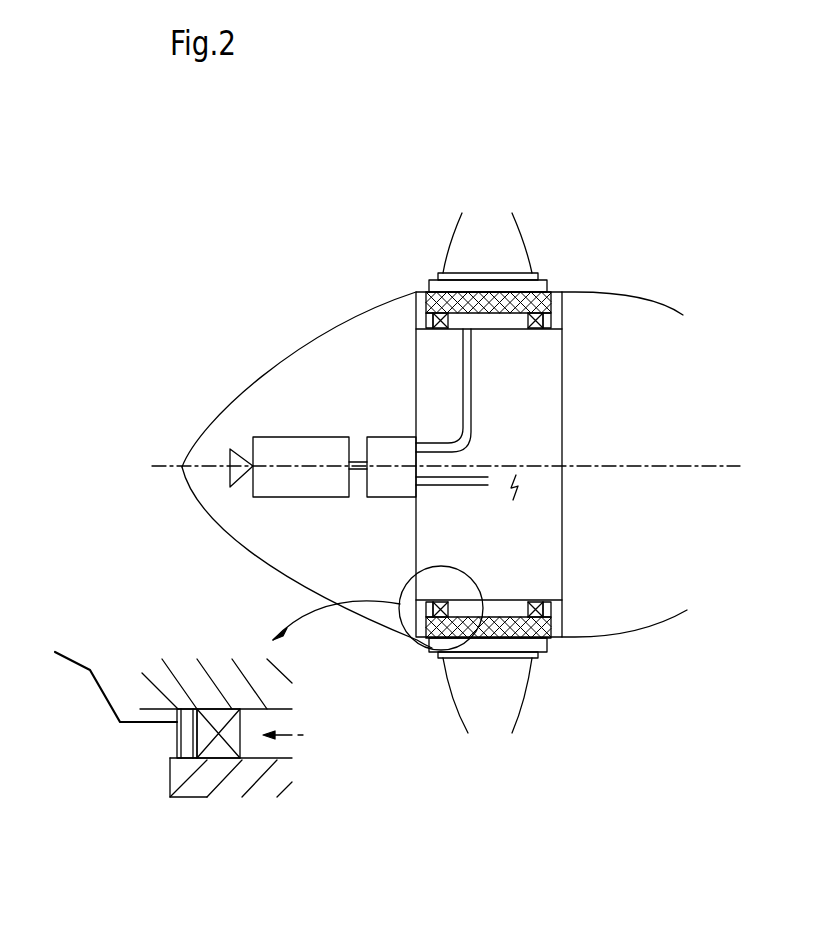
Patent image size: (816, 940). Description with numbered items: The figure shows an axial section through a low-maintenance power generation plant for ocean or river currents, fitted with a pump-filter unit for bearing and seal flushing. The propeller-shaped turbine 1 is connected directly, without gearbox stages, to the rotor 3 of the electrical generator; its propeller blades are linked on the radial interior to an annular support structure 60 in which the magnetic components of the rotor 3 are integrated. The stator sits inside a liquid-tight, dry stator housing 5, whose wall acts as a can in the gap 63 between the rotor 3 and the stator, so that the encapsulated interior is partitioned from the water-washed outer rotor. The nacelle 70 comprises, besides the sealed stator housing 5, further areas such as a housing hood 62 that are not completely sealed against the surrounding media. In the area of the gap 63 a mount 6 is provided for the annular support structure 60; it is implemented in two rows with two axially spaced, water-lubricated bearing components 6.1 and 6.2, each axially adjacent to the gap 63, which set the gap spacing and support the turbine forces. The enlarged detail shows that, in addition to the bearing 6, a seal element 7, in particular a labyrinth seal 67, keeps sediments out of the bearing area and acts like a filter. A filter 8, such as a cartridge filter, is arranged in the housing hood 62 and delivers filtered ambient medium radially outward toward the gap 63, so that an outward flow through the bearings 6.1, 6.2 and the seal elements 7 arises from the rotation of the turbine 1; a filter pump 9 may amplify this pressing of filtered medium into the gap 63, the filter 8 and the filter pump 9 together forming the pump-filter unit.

The turbine 1 is at (488, 237).
The rotor 3 is at (552, 295).
The stator housing 5 is at (563, 352).
The mount 6 is at (217, 755).
The bearing component 6.1 is at (450, 603).
The bearing component 6.2 is at (548, 604).
The seal element 7 is at (172, 735).
The filter 8 is at (275, 450).
The filter pump 9 is at (380, 443).
The annular support structure 60 is at (517, 643).
The housing hood 62 is at (345, 540).
The gap 63 is at (483, 320).
The labyrinth seal 67 is at (100, 678).
The nacelle 70 is at (656, 386).